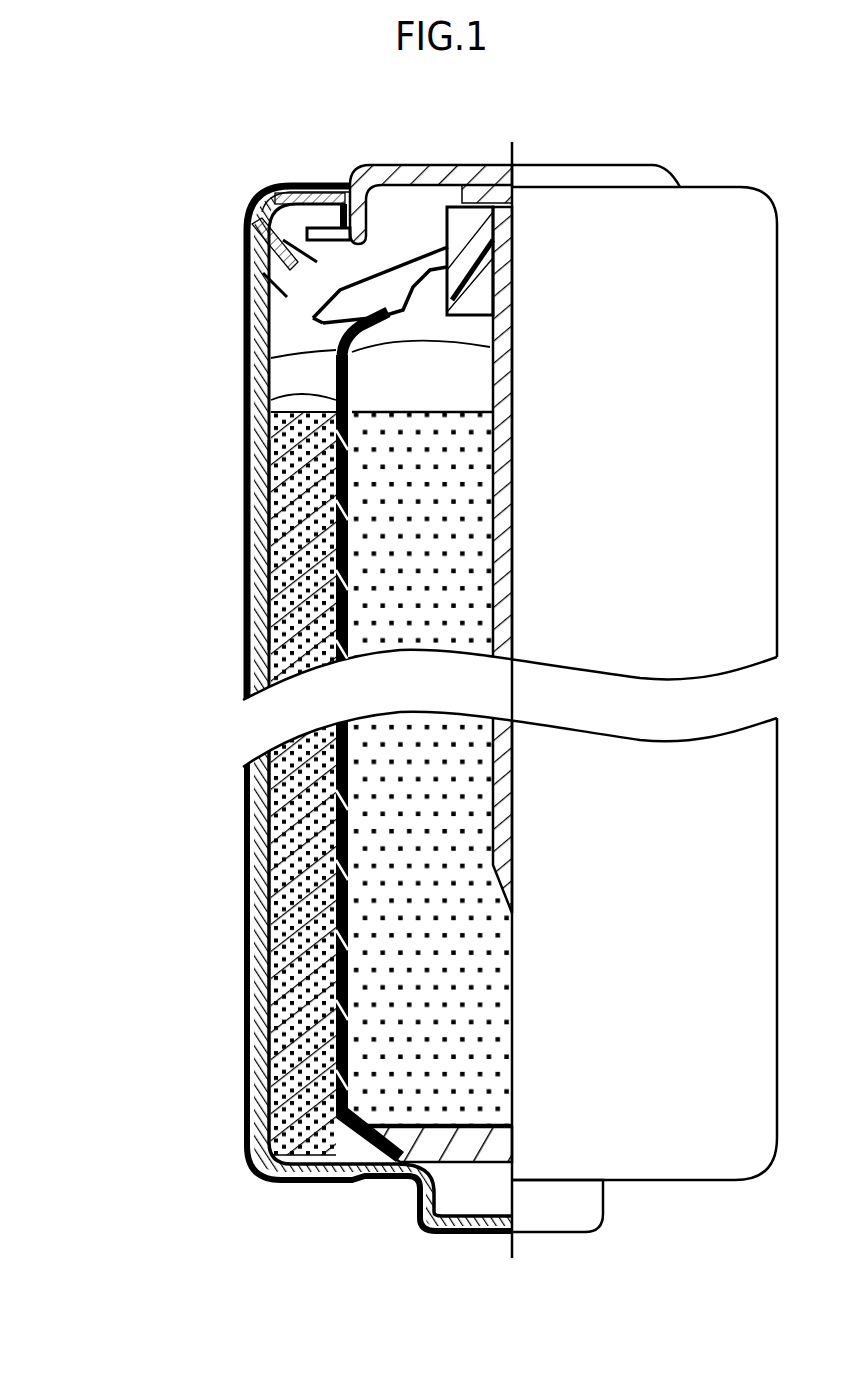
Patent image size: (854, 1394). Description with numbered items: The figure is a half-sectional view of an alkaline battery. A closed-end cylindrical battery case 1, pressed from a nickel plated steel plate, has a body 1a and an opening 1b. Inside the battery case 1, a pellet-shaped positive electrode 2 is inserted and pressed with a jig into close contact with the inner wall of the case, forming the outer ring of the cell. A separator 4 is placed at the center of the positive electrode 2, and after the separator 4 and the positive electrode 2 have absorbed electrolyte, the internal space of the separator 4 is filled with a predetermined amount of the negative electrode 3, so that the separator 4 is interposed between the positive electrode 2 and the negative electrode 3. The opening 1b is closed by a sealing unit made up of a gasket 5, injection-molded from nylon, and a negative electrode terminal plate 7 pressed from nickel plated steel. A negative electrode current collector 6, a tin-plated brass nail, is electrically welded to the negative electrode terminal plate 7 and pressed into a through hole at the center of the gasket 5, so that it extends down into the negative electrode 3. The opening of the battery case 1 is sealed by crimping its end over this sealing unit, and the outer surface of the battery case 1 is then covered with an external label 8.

The battery case 1 is at (265, 752).
The body 1a is at (262, 553).
The opening 1b is at (290, 183).
The positive electrode 2 is at (280, 957).
The negative electrode 3 is at (407, 873).
The separator 4 is at (245, 405).
The gasket 5 is at (268, 236).
The negative electrode current collector 6 is at (337, 353).
The negative electrode terminal plate 7 is at (397, 163).
The external label 8 is at (250, 1120).